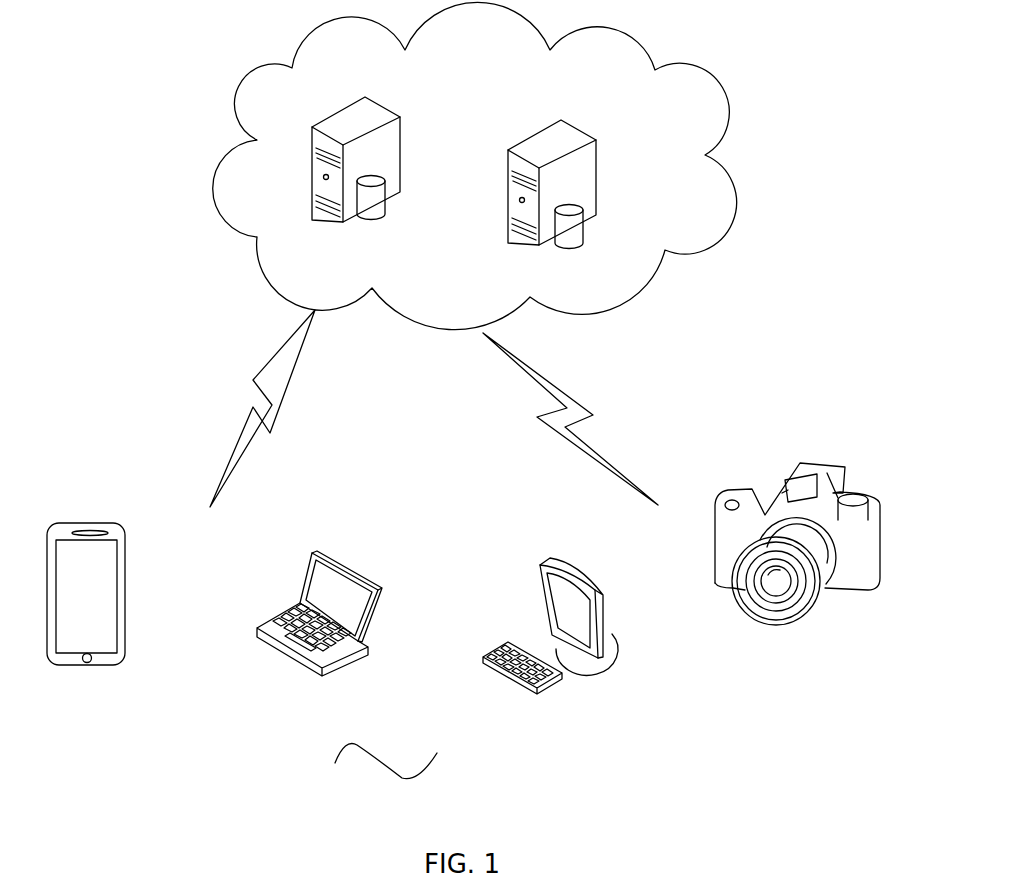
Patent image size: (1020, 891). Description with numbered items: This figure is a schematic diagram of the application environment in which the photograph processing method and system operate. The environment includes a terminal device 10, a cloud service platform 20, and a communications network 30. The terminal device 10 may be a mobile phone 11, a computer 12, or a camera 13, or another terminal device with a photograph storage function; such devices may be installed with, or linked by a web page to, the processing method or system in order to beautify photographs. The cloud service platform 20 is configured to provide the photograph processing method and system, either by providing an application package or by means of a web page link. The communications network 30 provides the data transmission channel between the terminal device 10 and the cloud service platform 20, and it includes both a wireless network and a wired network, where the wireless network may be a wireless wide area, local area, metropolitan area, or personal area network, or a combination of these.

The terminal device 10 is at (386, 748).
The mobile phone 11 is at (110, 522).
The computer 12 is at (372, 583).
The camera 13 is at (818, 462).
The cloud service platform 20 is at (628, 30).
The communications network 30 is at (585, 405).